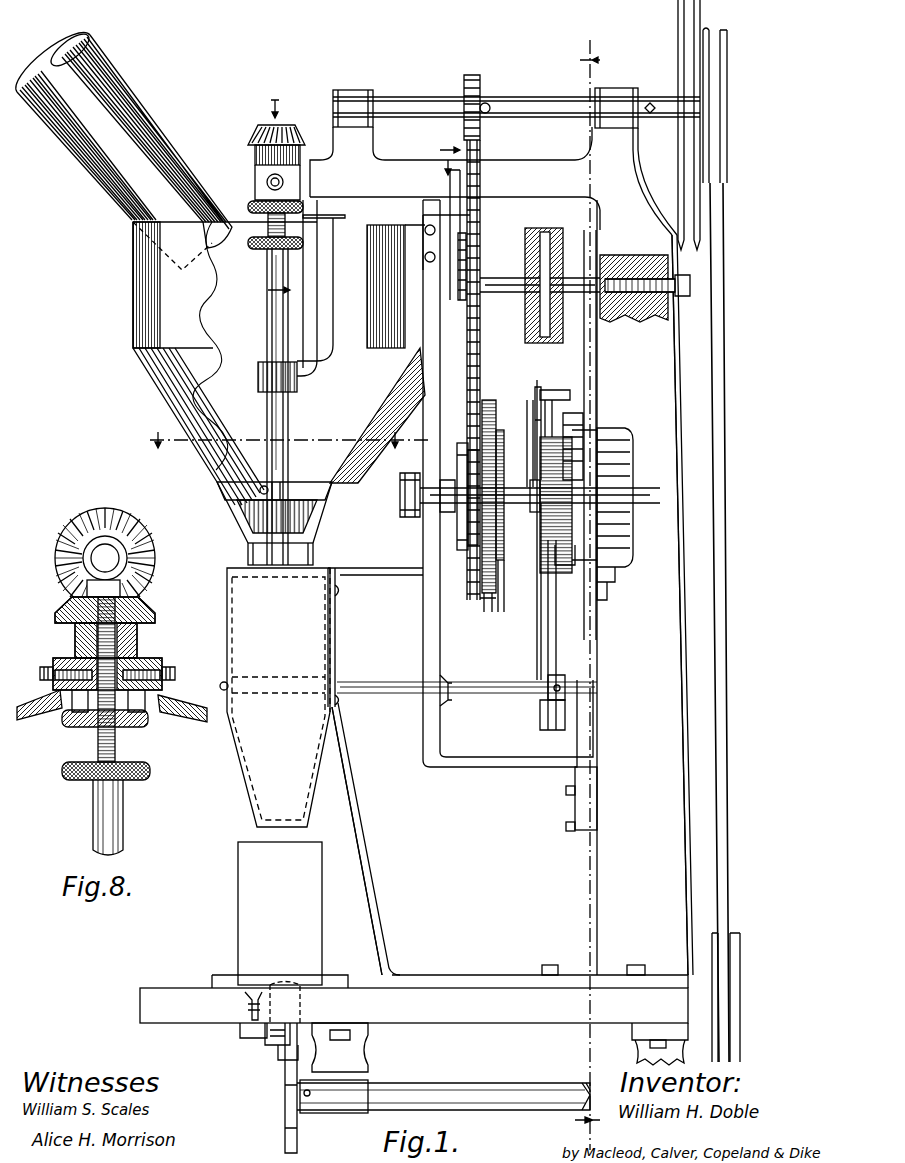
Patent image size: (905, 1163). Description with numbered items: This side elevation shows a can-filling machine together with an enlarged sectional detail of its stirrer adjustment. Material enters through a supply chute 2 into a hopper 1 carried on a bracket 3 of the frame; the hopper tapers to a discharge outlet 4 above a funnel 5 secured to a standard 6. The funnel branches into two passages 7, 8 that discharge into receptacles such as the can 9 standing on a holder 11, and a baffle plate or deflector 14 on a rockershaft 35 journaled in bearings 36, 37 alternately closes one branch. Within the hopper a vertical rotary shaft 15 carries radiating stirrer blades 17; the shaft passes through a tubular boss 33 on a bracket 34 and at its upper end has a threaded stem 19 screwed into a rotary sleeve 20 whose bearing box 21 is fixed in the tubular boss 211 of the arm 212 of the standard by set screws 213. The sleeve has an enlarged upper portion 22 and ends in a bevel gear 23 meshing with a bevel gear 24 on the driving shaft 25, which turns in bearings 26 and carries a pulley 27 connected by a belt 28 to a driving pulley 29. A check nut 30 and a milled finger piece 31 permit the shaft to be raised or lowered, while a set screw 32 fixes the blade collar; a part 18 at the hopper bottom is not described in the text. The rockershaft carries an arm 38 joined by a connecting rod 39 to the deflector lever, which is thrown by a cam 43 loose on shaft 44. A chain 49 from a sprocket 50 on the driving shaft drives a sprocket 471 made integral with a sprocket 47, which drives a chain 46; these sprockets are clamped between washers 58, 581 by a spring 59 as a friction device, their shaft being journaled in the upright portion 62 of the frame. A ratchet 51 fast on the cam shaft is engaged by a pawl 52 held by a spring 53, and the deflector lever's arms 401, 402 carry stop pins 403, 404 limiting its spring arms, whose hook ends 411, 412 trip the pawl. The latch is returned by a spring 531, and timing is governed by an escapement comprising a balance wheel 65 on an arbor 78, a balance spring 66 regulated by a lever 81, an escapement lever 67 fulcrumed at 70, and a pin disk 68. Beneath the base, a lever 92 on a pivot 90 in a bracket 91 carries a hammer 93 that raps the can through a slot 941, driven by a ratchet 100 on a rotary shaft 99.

In FIG. 1, the hopper 1 is at (160, 303).
In FIG. 1, the supply chute 2 is at (122, 105).
In FIG. 1, the bracket 3 is at (423, 410).
In FIG. 1, the discharge outlet 4 is at (290, 555).
In FIG. 1, the funnel 5 is at (275, 697).
In FIG. 1, the standard 6 is at (336, 647).
In FIG. 1, the branch passage 7 is at (300, 775).
In FIG. 1, the branch passage 8 is at (269, 191).
In FIG. 1, the receptacle 9 is at (328, 893).
In FIG. 1, the holder 11 is at (338, 988).
In FIG. 1, the baffle plate or deflector 14 is at (332, 632).
In FIG. 1, the vertical rotary shaft 15 is at (270, 345).
In FIG. 8, the vertical rotary shaft 15 is at (115, 825).
In FIG. 1, the stirrer blades 17 is at (268, 482).
In FIG. 1, the hopper bottom plate 18 is at (228, 490).
In FIG. 1, the threaded stem 19 is at (268, 225).
In FIG. 8, the threaded stem 19 is at (115, 746).
In FIG. 8, the rotary sleeve 20 is at (145, 653).
In FIG. 8, the box 21 is at (62, 668).
In FIG. 1, the enlarged upper portion 22 is at (255, 150).
In FIG. 8, the enlarged upper portion 22 is at (137, 640).
In FIG. 1, the bevel gear 23 is at (250, 127).
In FIG. 8, the bevel gear 23 is at (145, 610).
In FIG. 8, the bevel gear 24 is at (70, 520).
In FIG. 1, the driving shaft 25 is at (408, 97).
In FIG. 1, the bearings 26 is at (352, 97).
In FIG. 1, the pulley 27 is at (720, 100).
In FIG. 1, the belt 28 is at (718, 325).
In FIG. 1, the driving pulley 29 is at (735, 980).
In FIG. 1, the check nut 30 is at (250, 204).
In FIG. 8, the check nut 30 is at (65, 727).
In FIG. 1, the milled finger piece 31 is at (250, 248).
In FIG. 8, the milled finger piece 31 is at (150, 775).
In FIG. 1, the set screw 32 is at (245, 520).
In FIG. 1, the tubular boss 33 is at (265, 378).
In FIG. 1, the bracket 34 is at (325, 325).
In FIG. 1, the rockershaft 35 is at (388, 682).
In FIG. 1, the bearing 36 is at (450, 683).
In FIG. 1, the bearing 37 is at (597, 683).
In FIG. 1, the arm 38 is at (565, 708).
In FIG. 1, the connecting rod 39 is at (548, 650).
In FIG. 1, the cam 43 is at (558, 575).
In FIG. 1, the cam shaft 44 is at (525, 540).
In FIG. 1, the chain 46 is at (500, 432).
In FIG. 1, the sprocket 47 is at (490, 405).
In FIG. 1, the chain 49 is at (480, 372).
In FIG. 1, the sprocket 50 is at (478, 75).
In FIG. 1, the ratchet 51 is at (565, 505).
In FIG. 1, the pawl 52 is at (600, 533).
In FIG. 1, the spring 53 is at (575, 548).
In FIG. 1, the washer 58 is at (505, 560).
In FIG. 1, the spring 59 is at (503, 488).
In FIG. 1, the upright portion 62 is at (663, 615).
In FIG. 1, the balance wheel 65 is at (550, 343).
In FIG. 1, the spring 66 is at (481, 272).
In FIG. 1, the escapement lever 67 is at (596, 368).
In FIG. 1, the pin disk 68 is at (598, 262).
In FIG. 1, the fulcrum 70 is at (598, 415).
In FIG. 1, the arbor 78 is at (505, 292).
In FIG. 1, the lever 81 is at (450, 215).
In FIG. 1, the pivot 90 is at (300, 1050).
In FIG. 1, the bracket 91 is at (265, 1055).
In FIG. 1, the lever 92 is at (282, 1058).
In FIG. 1, the hammer 93 is at (285, 990).
In FIG. 1, the rotary shaft 99 is at (476, 1083).
In FIG. 1, the ratchet 100 is at (297, 1138).
In FIG. 8, the tubular boss 211 is at (186, 725).
In FIG. 1, the arm 212 is at (350, 180).
In FIG. 1, the set screws 213 is at (267, 182).
In FIG. 8, the set screws 213 is at (38, 672).
In FIG. 1, the arm 401 is at (528, 610).
In FIG. 1, the arm 402 is at (533, 440).
In FIG. 1, the stop pin 403 is at (565, 565).
In FIG. 1, the stop pin 404 is at (545, 410).
In FIG. 1, the hook end 411 is at (575, 555).
In FIG. 1, the hook end 412 is at (600, 430).
In FIG. 1, the sprocket 471 is at (486, 612).
In FIG. 1, the spring 531 is at (585, 460).
In FIG. 1, the washer 581 is at (445, 535).
In FIG. 1, the slot 941 is at (248, 995).